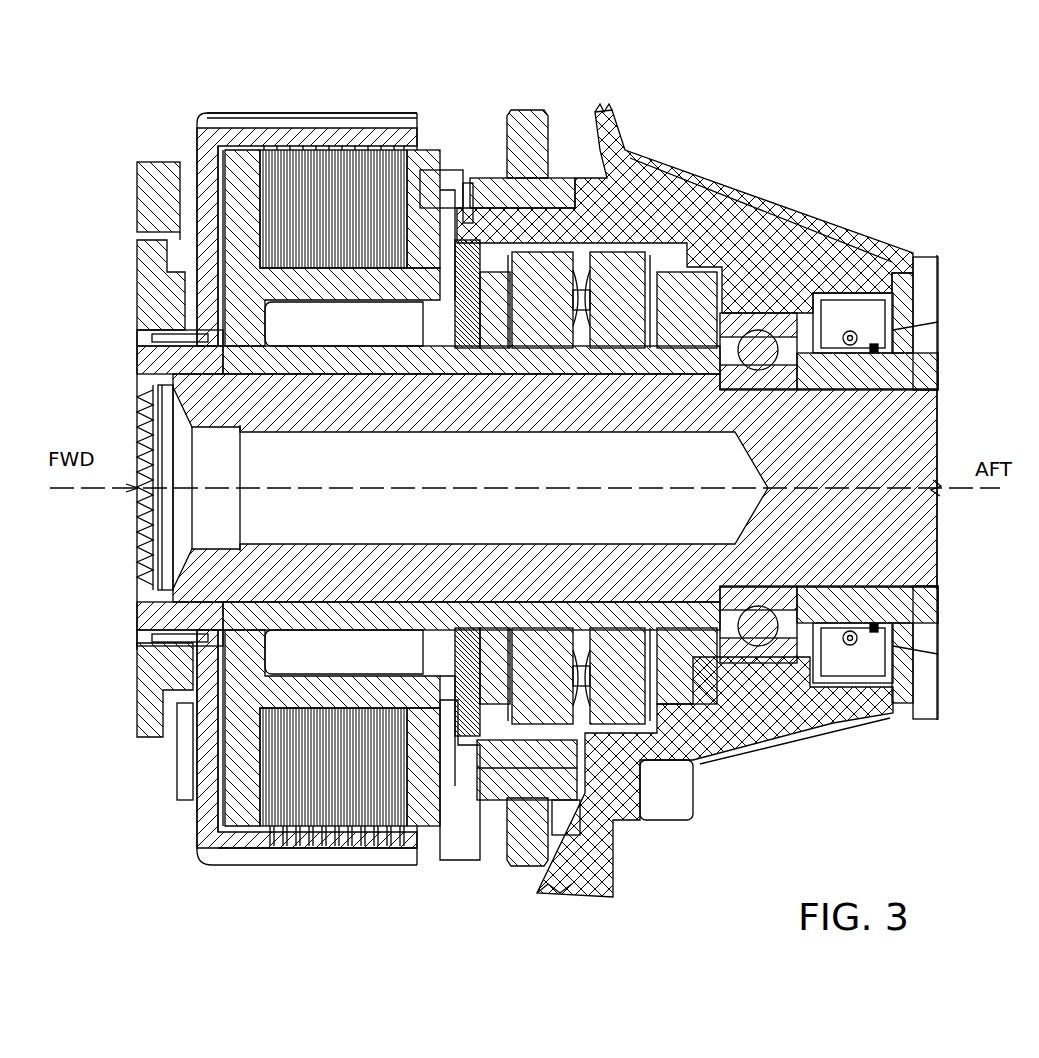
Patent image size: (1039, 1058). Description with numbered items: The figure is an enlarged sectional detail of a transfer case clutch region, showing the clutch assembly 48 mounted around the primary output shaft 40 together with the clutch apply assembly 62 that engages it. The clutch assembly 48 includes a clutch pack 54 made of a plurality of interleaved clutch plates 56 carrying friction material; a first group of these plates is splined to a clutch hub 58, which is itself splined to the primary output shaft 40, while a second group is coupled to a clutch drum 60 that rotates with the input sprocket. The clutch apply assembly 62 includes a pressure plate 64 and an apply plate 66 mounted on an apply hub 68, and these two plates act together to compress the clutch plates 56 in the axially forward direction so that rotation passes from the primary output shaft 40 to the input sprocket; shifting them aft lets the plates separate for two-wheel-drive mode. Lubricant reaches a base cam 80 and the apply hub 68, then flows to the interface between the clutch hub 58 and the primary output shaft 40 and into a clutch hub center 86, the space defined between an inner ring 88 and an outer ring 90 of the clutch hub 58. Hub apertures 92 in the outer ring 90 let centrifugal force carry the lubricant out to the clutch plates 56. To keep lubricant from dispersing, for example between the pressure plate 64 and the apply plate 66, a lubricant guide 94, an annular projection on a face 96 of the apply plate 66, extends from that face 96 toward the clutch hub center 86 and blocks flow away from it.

The primary output shaft 40 is at (802, 438).
The clutch assembly 48 is at (295, 65).
The clutch pack 54 is at (278, 100).
The clutch plates 56 is at (372, 150).
The clutch hub 58 is at (243, 287).
The clutch drum 60 is at (222, 125).
The clutch apply assembly 62 is at (520, 392).
The pressure plate 64 is at (423, 168).
The apply plate 66 is at (468, 240).
The apply hub 68 is at (688, 357).
The base cam 80 is at (627, 283).
The clutch hub center 86 is at (296, 318).
The inner ring 88 is at (297, 617).
The outer ring 90 is at (337, 677).
The hub apertures 92 is at (305, 267).
The lubricant guide 94 is at (415, 320).
The face 96 is at (447, 707).